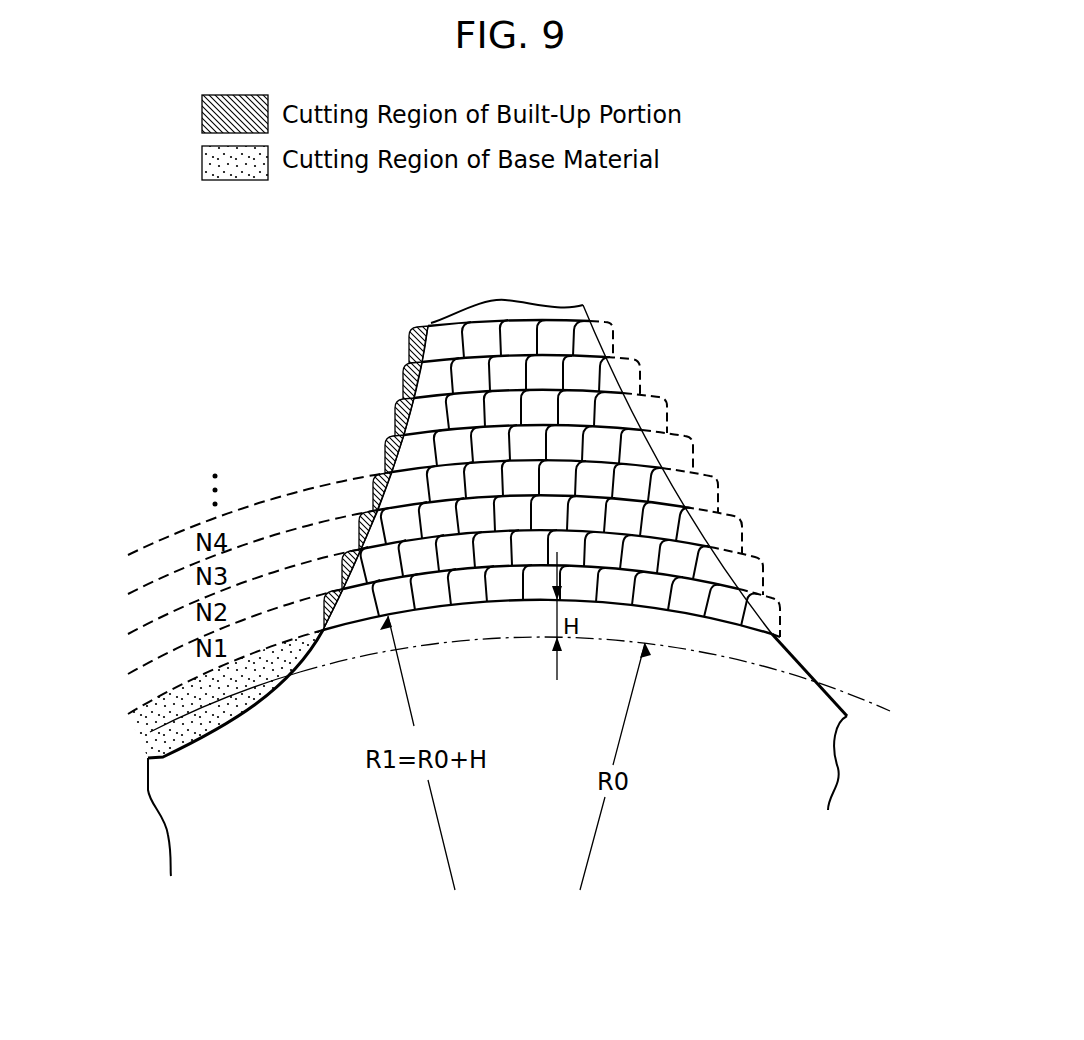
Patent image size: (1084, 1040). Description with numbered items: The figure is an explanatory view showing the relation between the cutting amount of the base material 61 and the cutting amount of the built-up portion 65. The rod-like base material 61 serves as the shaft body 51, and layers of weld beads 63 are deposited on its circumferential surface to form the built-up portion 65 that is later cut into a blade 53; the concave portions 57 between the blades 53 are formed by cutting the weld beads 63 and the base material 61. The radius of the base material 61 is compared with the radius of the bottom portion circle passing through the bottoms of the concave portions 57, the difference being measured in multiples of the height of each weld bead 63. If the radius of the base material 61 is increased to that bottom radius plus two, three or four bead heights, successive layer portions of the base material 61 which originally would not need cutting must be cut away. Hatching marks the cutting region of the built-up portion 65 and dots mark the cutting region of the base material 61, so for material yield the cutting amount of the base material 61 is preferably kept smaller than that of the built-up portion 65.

The shaft body 51 is at (760, 715).
The base material 61 is at (529, 699).
The blade 53 is at (400, 378).
The concave portion 57 is at (200, 737).
The weld bead 63 is at (496, 510).
The built-up portion 65 is at (640, 362).